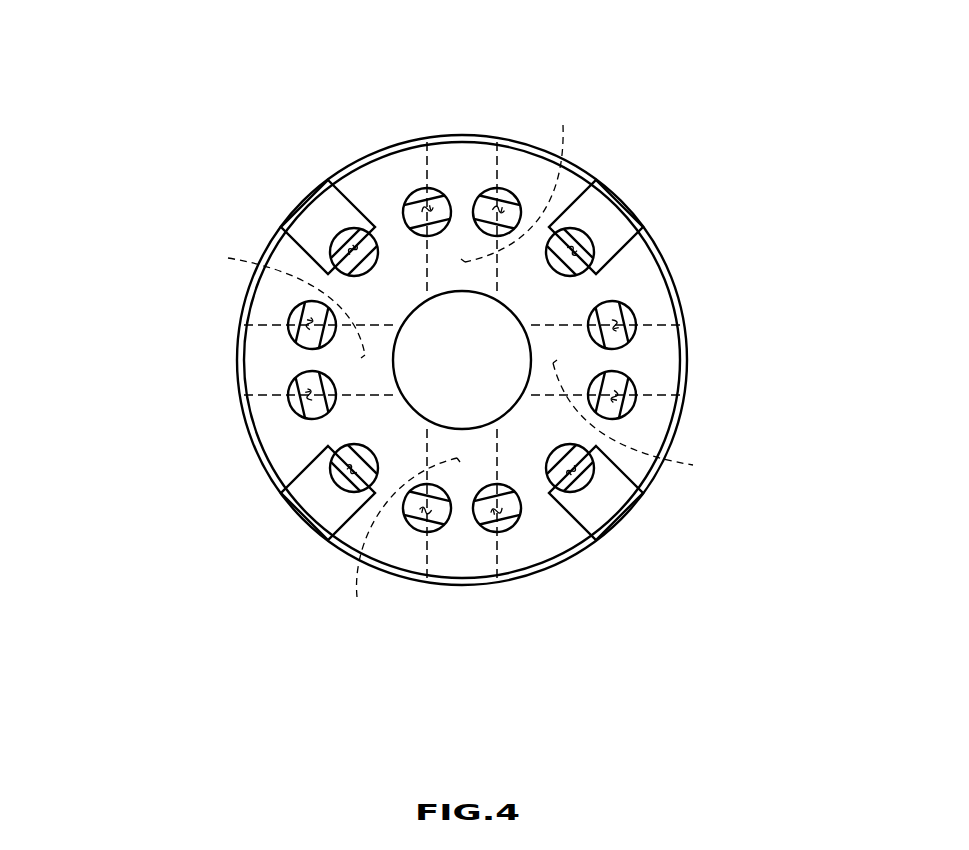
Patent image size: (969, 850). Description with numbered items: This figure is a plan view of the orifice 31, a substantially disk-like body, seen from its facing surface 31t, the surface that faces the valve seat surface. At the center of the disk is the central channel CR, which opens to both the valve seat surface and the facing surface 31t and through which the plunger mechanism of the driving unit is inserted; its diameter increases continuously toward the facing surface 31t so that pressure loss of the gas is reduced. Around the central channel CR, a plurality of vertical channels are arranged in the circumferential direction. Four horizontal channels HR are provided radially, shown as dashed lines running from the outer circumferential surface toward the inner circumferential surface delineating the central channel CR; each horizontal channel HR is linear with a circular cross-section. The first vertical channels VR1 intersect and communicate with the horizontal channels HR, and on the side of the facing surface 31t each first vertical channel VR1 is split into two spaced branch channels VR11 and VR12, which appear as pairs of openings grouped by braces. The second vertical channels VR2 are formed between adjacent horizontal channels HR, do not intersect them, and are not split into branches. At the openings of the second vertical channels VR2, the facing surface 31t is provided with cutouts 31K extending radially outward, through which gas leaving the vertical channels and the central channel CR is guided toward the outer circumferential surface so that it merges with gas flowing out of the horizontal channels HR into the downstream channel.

The orifice 31 is at (291, 103).
The facing surface 31t is at (383, 186).
The cutout 31K is at (285, 228).
The first vertical channel VR1 is at (552, 43).
The branch channel VR11 is at (503, 200).
The branch channel VR12 is at (410, 205).
The second vertical channel VR2 is at (342, 245).
The horizontal channel HR is at (461, 363).
The central channel CR is at (481, 376).